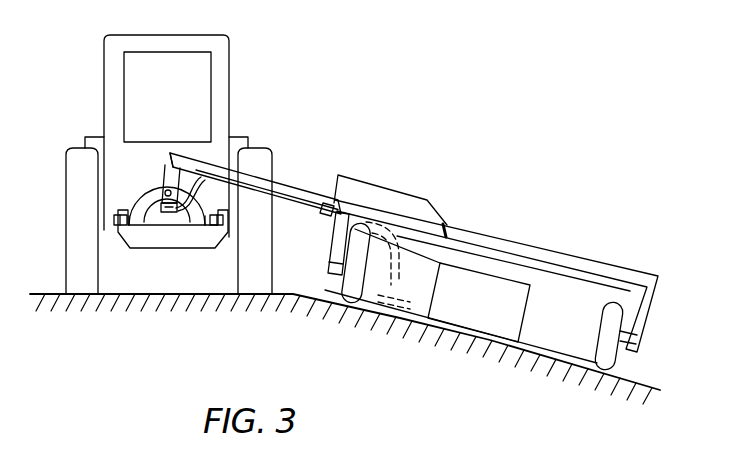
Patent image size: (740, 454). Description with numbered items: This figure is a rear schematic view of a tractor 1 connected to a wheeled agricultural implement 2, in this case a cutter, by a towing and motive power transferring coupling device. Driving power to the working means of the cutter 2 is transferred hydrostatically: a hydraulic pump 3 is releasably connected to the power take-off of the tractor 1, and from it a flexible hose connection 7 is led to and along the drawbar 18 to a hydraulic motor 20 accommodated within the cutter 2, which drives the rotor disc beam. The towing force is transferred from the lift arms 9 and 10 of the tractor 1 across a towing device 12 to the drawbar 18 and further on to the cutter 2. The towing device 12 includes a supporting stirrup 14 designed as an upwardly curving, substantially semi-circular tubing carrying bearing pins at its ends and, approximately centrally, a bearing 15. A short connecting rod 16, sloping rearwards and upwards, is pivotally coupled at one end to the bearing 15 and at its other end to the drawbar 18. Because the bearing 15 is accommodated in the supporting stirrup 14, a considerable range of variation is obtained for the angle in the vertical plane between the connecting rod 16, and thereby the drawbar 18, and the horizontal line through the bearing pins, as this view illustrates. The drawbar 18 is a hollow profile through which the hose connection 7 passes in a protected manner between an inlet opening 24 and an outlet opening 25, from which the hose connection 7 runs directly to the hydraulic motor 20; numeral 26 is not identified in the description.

The tractor 1 is at (188, 93).
The wheeled agricultural implement 2 is at (484, 309).
The hydraulic pump 3 is at (158, 214).
The flexible hose connection 7 is at (188, 226).
The lift arm 9 is at (124, 238).
The lift arm 10 is at (214, 226).
The towing device 12 is at (172, 178).
The supporting stirrup 14 is at (146, 199).
The bearing 15 is at (153, 206).
The connecting rod 16 is at (176, 172).
The drawbar 18 is at (289, 191).
The hydraulic motor 20 is at (358, 303).
The inlet opening 24 is at (197, 172).
The outlet opening 25 is at (333, 212).
The trailer frame rail 26 is at (484, 238).